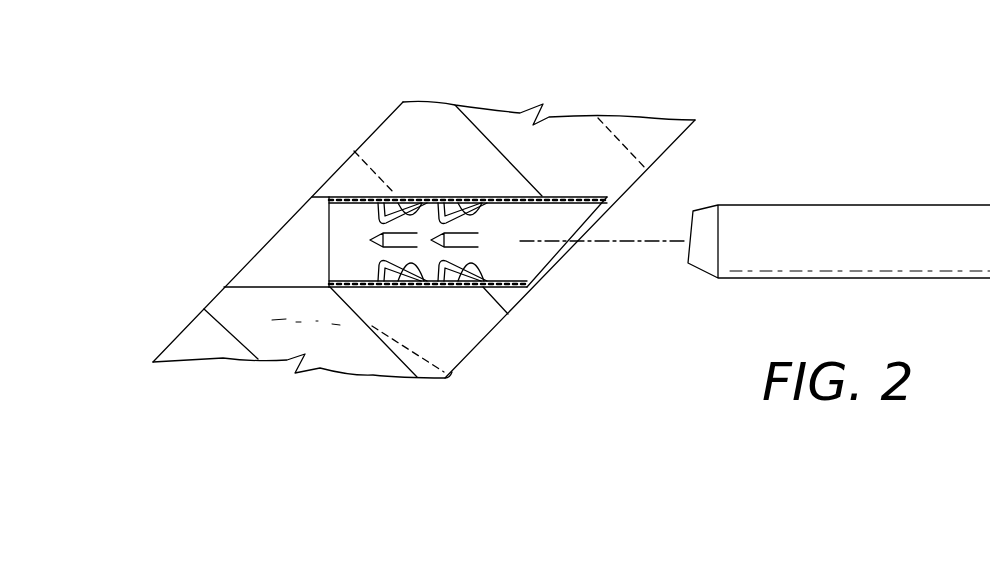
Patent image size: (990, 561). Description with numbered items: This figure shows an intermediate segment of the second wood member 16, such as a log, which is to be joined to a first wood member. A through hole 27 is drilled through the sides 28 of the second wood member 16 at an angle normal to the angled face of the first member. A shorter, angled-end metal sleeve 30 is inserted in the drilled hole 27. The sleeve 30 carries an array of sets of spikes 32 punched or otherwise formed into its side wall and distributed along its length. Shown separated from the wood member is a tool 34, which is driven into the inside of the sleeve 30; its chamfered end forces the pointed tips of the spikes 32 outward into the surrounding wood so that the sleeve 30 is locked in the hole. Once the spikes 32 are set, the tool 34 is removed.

The second wood member 16 is at (378, 119).
The through hole 27 is at (272, 285).
The sides 28 is at (333, 172).
The second metal sleeve 30 is at (555, 190).
The spikes 32 is at (410, 237).
The tool 34 is at (918, 168).